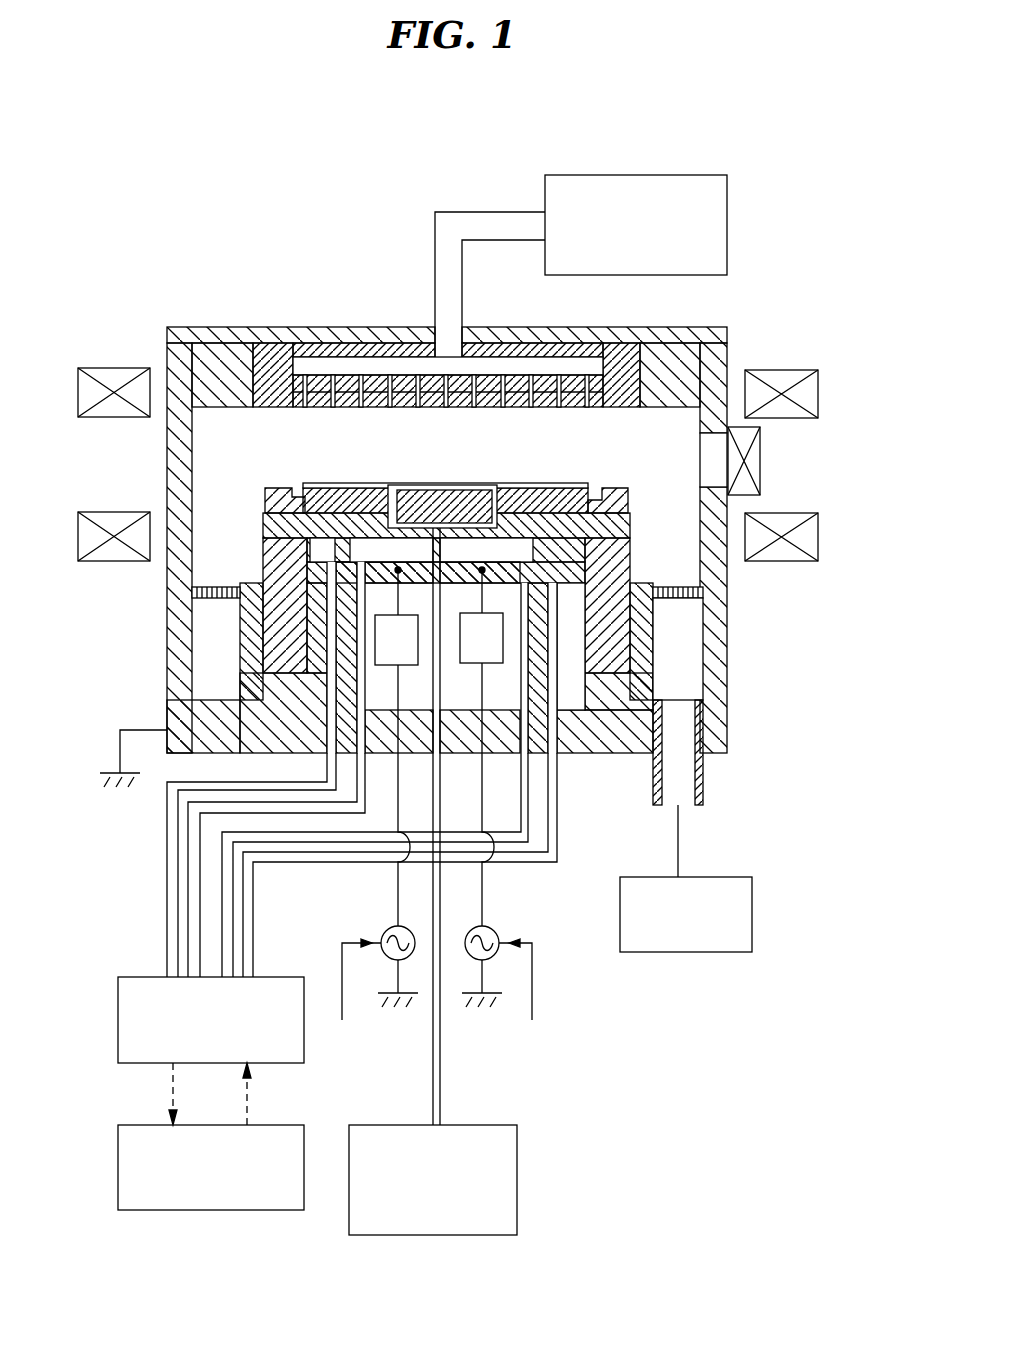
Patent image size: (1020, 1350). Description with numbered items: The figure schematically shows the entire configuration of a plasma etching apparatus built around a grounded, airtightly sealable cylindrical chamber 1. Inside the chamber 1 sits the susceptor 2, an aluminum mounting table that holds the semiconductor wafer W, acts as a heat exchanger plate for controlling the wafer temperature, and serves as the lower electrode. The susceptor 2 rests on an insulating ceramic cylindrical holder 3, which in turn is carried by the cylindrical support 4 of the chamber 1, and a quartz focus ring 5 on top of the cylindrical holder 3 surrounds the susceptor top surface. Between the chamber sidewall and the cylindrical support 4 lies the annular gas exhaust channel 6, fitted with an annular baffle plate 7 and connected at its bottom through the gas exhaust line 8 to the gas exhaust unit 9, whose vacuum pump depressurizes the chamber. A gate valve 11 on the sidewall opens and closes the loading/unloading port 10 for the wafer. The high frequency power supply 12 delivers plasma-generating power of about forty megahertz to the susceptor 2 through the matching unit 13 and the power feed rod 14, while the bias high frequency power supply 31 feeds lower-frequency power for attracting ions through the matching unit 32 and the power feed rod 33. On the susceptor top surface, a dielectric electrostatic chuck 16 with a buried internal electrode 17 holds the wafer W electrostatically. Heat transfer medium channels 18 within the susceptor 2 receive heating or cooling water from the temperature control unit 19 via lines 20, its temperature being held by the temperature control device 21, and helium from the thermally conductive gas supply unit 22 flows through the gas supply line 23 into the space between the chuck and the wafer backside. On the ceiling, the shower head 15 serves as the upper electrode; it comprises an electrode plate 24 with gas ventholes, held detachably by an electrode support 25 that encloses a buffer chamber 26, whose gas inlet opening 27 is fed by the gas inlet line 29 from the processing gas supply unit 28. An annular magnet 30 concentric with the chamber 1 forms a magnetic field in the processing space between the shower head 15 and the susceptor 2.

The chamber 1 is at (189, 306).
The susceptor 2 is at (300, 562).
The cylindrical holder 3 is at (270, 610).
The cylindrical support 4 is at (247, 663).
The focus ring 5 is at (272, 495).
The gas exhaust channel 6 is at (683, 648).
The baffle plate 7 is at (682, 587).
The gas exhaust line 8 is at (705, 791).
The gas exhaust unit 9 is at (724, 877).
The loading/unloading port 10 is at (702, 463).
The gate valve 11 is at (762, 456).
The high frequency power supply 12 is at (387, 931).
The matching unit 13 is at (403, 665).
The power feed rod 14 is at (398, 585).
The shower head 15 is at (376, 352).
The electrostatic chuck 16 is at (600, 513).
The internal electrode 17 is at (370, 488).
The heat transfer medium channel 18 is at (330, 540).
The temperature control unit 19 is at (132, 977).
The lines 20 is at (166, 880).
The temperature control device 21 is at (132, 1125).
The thermally conductive gas supply unit 22 is at (492, 1125).
The gas supply line 23 is at (437, 790).
The electrode plate 24 is at (572, 408).
The electrode support 25 is at (305, 343).
The buffer chamber 26 is at (558, 345).
The gas inlet opening 27 is at (447, 343).
The processing gas supply unit 28 is at (730, 196).
The gas inlet line 29 is at (433, 245).
The annular magnet 30 is at (100, 368).
The bias high frequency power supply 31 is at (493, 931).
The matching unit 32 is at (476, 663).
The power feed rod 33 is at (483, 585).
The semiconductor wafer W is at (448, 483).